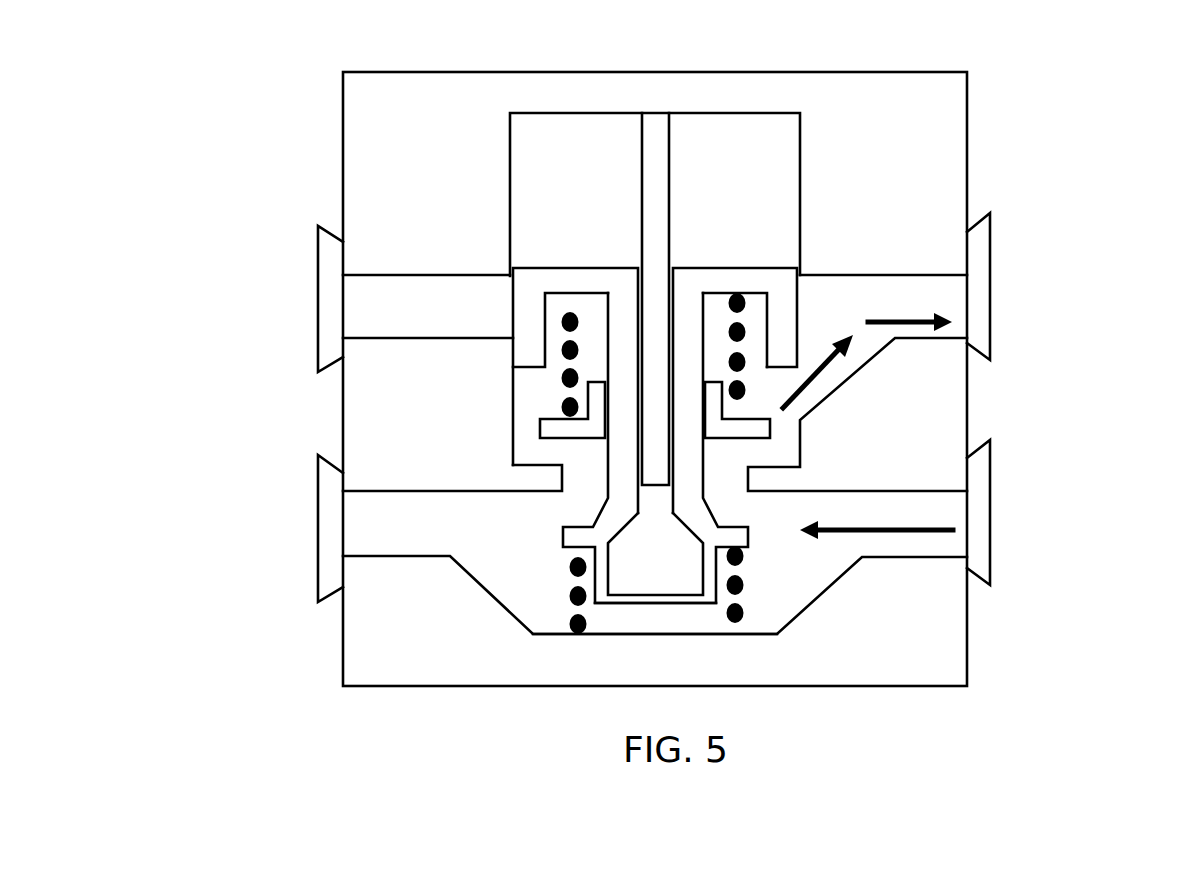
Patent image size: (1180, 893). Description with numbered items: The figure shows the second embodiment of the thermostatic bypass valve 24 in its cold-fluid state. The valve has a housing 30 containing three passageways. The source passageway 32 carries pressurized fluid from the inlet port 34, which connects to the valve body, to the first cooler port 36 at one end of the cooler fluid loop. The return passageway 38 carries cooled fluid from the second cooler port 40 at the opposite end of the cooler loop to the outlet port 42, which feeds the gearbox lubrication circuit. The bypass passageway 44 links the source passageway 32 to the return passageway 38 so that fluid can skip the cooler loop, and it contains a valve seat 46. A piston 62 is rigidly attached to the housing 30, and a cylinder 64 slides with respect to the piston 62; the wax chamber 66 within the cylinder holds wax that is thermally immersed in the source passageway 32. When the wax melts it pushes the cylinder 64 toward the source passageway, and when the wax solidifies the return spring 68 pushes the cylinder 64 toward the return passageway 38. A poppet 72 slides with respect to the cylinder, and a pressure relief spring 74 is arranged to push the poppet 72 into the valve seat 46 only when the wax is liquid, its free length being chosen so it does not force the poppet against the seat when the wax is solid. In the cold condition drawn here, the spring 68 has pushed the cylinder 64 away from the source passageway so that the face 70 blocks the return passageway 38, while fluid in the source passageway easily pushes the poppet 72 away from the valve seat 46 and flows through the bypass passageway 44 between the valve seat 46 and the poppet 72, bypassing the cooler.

The bypass valve 24 is at (1026, 171).
The housing 30 is at (438, 179).
The source passageway 32 is at (786, 582).
The inlet port 34 is at (990, 563).
The first cooler port 36 is at (318, 575).
The return passageway 38 is at (883, 314).
The second cooler port 40 is at (320, 258).
The outlet port 42 is at (990, 327).
The bypass passageway 44 is at (741, 475).
The valve seat 46 is at (538, 463).
The piston 62 is at (642, 227).
The cylinder 64 is at (645, 603).
The piston cavity 66 is at (668, 579).
The return spring 68 is at (574, 594).
The face 70 is at (512, 283).
The poppet 72 is at (592, 440).
The pressure relief spring 74 is at (566, 349).